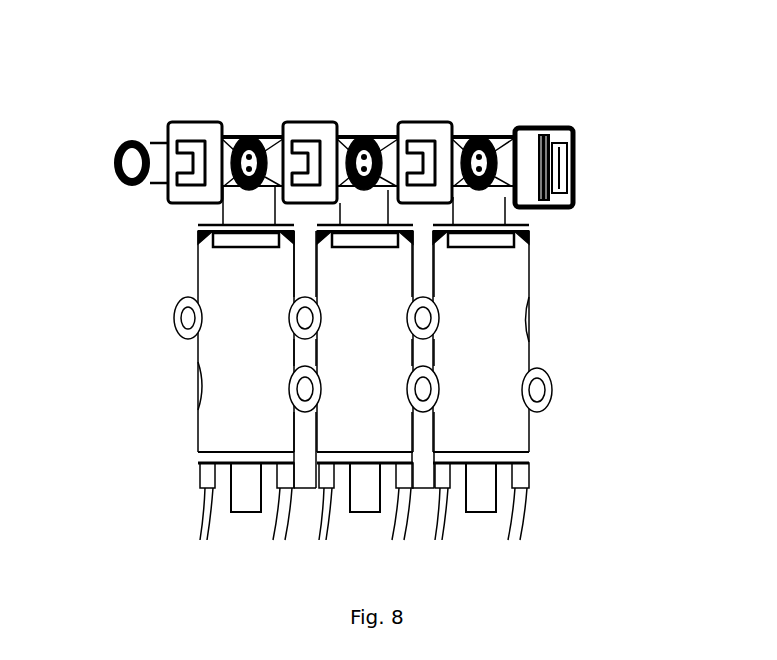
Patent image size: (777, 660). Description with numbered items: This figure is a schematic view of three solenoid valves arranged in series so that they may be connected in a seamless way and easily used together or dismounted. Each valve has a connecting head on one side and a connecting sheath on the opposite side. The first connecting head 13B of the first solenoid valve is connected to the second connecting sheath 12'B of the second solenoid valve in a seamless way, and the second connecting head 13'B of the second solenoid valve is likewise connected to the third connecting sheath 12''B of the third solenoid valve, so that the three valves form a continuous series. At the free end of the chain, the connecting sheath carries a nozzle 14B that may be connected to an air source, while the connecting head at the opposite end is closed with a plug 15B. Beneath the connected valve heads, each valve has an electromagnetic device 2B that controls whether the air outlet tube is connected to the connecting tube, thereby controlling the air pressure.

The first connecting head 13B is at (312, 123).
The second connecting sheath 12'B is at (367, 104).
The second connecting head 13'B is at (425, 107).
The third connecting sheath 12''B is at (482, 105).
The plug 15B is at (573, 150).
The nozzle 14B is at (157, 177).
The electromagnetic device 2B is at (198, 397).